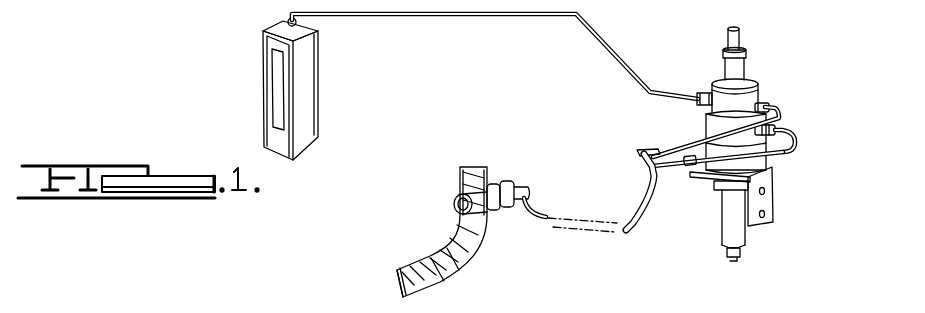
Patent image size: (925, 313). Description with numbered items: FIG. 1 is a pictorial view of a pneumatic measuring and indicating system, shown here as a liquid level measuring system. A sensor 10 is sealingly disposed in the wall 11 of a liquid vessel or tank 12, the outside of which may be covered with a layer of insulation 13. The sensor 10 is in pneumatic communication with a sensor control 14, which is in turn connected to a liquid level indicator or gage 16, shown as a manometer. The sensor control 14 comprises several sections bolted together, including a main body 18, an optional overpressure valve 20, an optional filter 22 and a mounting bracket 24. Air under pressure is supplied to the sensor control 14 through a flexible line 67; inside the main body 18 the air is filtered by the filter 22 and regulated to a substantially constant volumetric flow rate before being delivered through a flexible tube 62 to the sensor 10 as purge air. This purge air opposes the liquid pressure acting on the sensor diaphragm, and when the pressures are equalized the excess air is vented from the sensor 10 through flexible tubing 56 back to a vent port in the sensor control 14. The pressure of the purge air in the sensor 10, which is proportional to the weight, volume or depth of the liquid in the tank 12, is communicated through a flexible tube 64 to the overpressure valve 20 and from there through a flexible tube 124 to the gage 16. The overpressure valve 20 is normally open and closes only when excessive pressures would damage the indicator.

The sensor 10 is at (520, 175).
The wall 11 is at (440, 252).
The liquid vessel or tank 12 is at (468, 275).
The layer of insulation 13 is at (473, 166).
The sensor control 14 is at (723, 150).
The liquid level indicator or gage 16 is at (322, 73).
The main body 18 is at (787, 150).
The overpressure valve 20 is at (740, 70).
The filter 22 is at (727, 228).
The mounting bracket 24 is at (763, 203).
The flexible tubing 56 is at (678, 136).
The flexible tube 62 is at (796, 140).
The flexible tube 64 is at (781, 114).
The flexible line 67 is at (640, 161).
The flexible tube 124 is at (512, 18).